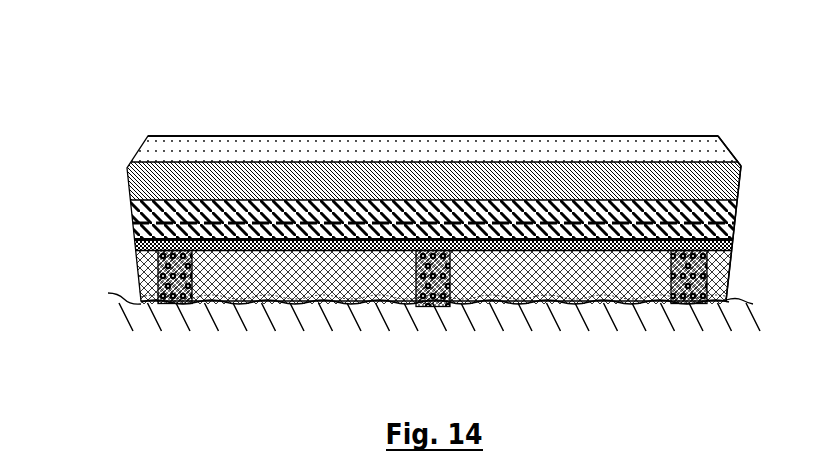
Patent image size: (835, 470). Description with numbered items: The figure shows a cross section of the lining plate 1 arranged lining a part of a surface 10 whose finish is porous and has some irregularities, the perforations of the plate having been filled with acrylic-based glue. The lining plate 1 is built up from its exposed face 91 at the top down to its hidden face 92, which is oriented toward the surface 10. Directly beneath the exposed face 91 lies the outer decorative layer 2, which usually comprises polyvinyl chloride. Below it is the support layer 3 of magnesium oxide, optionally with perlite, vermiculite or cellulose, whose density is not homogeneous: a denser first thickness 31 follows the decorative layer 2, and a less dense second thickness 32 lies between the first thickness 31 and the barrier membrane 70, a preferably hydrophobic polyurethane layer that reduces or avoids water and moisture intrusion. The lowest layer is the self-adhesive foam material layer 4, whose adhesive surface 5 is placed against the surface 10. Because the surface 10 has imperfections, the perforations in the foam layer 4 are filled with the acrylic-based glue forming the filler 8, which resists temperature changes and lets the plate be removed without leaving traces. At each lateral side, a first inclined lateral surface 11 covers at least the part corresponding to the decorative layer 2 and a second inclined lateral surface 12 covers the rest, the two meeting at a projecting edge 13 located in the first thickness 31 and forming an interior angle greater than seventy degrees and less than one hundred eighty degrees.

The lining plate 1 is at (532, 88).
The outer decorative layer 2 is at (662, 143).
The support layer 3 is at (390, 197).
The self-adhesive foam material layer 4 is at (553, 268).
The adhesive surface 5 is at (612, 283).
The filler 8 is at (135, 272).
The surface 10 is at (733, 326).
The first inclined lateral surface 11 is at (724, 139).
The second inclined lateral surface 12 is at (728, 228).
The edge 13 is at (735, 159).
The first thickness 31 is at (145, 178).
The second thickness 32 is at (411, 219).
The barrier membrane 70 is at (132, 237).
The exposed face 91 is at (226, 126).
The hidden face 92 is at (329, 304).